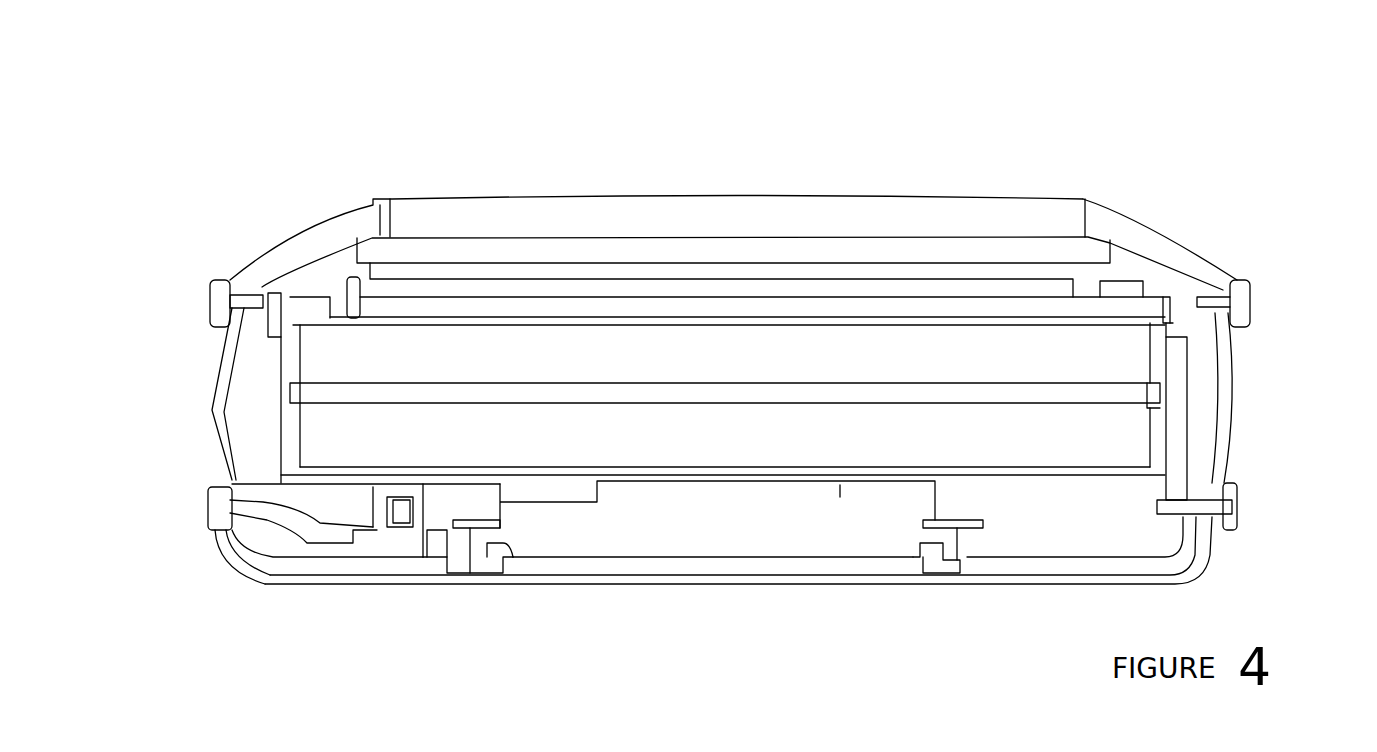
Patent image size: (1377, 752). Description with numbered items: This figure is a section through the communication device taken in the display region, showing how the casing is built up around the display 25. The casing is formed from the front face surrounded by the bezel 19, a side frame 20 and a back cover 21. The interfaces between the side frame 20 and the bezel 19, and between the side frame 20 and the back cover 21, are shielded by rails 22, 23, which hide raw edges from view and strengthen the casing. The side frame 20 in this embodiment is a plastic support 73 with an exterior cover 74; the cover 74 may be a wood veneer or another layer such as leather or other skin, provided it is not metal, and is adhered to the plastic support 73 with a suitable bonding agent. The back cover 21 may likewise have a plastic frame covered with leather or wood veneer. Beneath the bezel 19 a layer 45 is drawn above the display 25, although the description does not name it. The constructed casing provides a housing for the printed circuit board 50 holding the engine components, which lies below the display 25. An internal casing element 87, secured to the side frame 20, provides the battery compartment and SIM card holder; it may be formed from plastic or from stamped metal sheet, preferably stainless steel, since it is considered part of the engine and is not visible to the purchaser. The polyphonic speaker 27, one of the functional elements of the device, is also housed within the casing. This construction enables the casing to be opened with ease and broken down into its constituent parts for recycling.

The bezel 19 is at (333, 230).
The upper plate 45 is at (412, 272).
The display 25 is at (765, 292).
The printed circuit board 50 is at (553, 397).
The plastic support 73 is at (250, 397).
The rail 22 is at (1245, 300).
The exterior cover 74 is at (213, 433).
The rail 23 is at (1228, 500).
The side frame 20 is at (210, 490).
The back cover 21 is at (437, 580).
The internal casing element 87 is at (268, 560).
The polyphonic speaker 27 is at (667, 540).